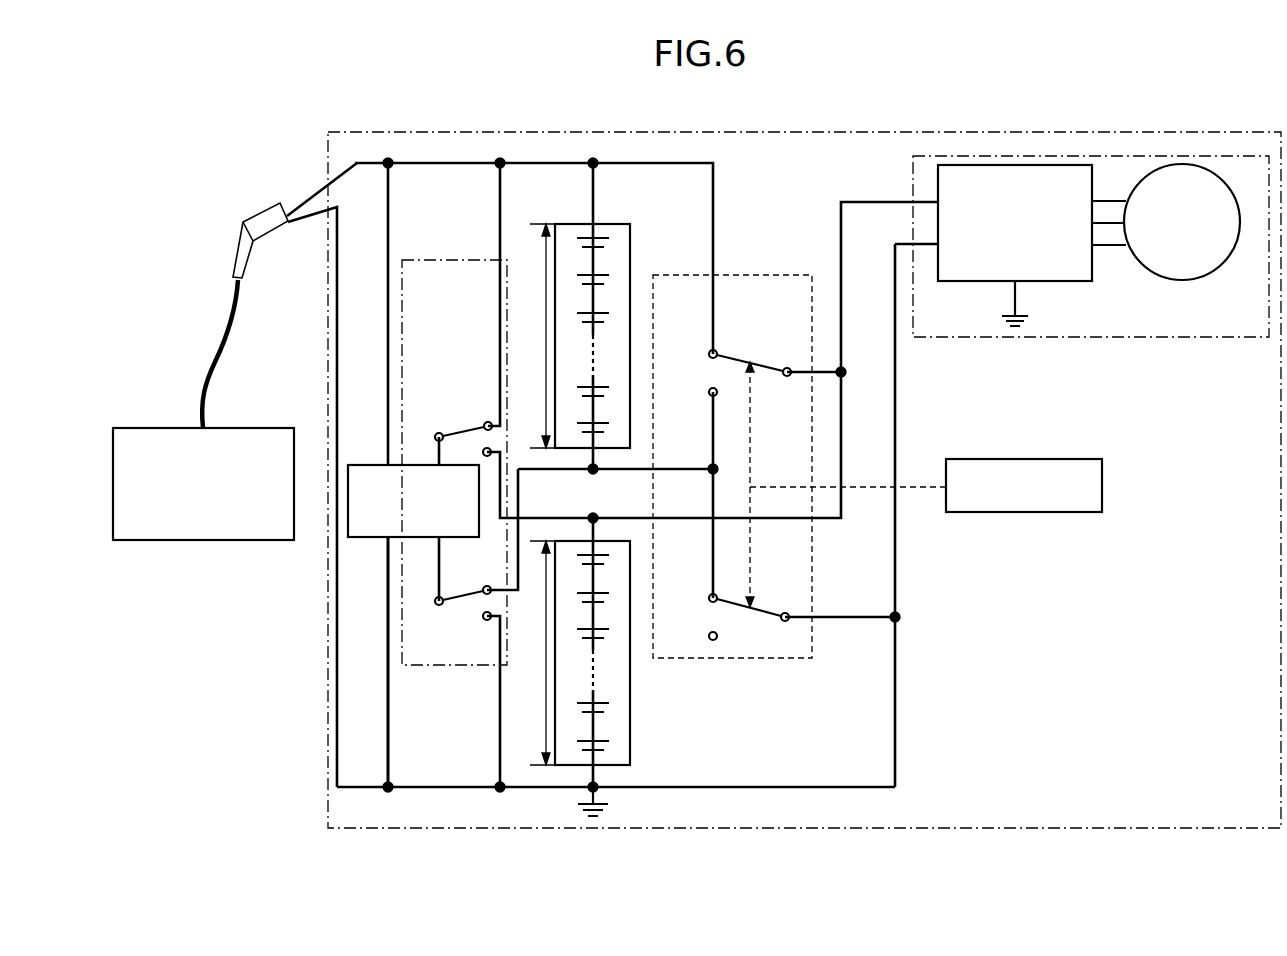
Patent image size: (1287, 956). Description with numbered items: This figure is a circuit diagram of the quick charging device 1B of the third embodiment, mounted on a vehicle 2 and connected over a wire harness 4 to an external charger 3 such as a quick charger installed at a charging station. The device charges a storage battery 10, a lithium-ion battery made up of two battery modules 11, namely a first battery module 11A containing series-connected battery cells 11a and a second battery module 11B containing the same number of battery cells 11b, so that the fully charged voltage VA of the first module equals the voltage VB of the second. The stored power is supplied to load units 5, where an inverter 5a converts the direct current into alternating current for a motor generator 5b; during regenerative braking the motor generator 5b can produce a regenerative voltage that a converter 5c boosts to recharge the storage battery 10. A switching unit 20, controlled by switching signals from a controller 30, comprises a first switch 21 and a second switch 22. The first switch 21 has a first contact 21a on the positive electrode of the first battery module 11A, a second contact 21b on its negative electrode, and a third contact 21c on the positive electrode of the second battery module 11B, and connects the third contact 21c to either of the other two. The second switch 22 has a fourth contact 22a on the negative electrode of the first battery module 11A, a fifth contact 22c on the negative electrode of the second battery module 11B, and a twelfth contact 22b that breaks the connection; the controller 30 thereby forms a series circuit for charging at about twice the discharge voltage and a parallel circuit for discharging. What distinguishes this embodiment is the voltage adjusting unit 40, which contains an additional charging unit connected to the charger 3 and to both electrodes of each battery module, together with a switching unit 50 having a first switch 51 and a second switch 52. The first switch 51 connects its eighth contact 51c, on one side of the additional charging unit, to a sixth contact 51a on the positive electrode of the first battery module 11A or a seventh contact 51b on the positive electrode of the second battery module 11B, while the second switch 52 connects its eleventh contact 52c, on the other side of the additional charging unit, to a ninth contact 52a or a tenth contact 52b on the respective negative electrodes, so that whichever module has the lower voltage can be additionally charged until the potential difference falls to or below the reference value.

The quick charging device 1B is at (755, 190).
The vehicle 2 is at (850, 132).
The external charger 3 is at (247, 428).
The wire harness 4 is at (523, 163).
The load unit 5 is at (1091, 270).
The inverter 5a is at (1028, 245).
The motor generator 5b is at (1178, 280).
The converter 5c is at (1050, 281).
The storage battery 10 is at (612, 475).
The battery module 11 is at (621, 475).
The first battery module 11A is at (613, 316).
The second battery module 11B is at (630, 652).
The battery cell 11a is at (600, 238).
The battery cell 11b is at (600, 555).
The switching unit 20 is at (765, 275).
The first switch 21 is at (758, 385).
The first contact 21a is at (716, 350).
The second contact 21b is at (710, 388).
The third contact 21c is at (785, 378).
The second switch 22 is at (784, 584).
The fourth contact 22a is at (708, 600).
The twelfth contact 22b is at (713, 641).
The fifth contact 22c is at (785, 622).
The controller 30 is at (1070, 459).
The voltage adjusting unit 40 is at (362, 465).
The switching unit 50 is at (455, 260).
The first switch 51 is at (500, 340).
The sixth contact 51a is at (486, 421).
The seventh contact 51b is at (486, 448).
The eighth contact 51c is at (439, 432).
The second switch 52 is at (464, 628).
The ninth contact 52a is at (484, 586).
The tenth contact 52b is at (470, 634).
The eleventh contact 52c is at (436, 606).